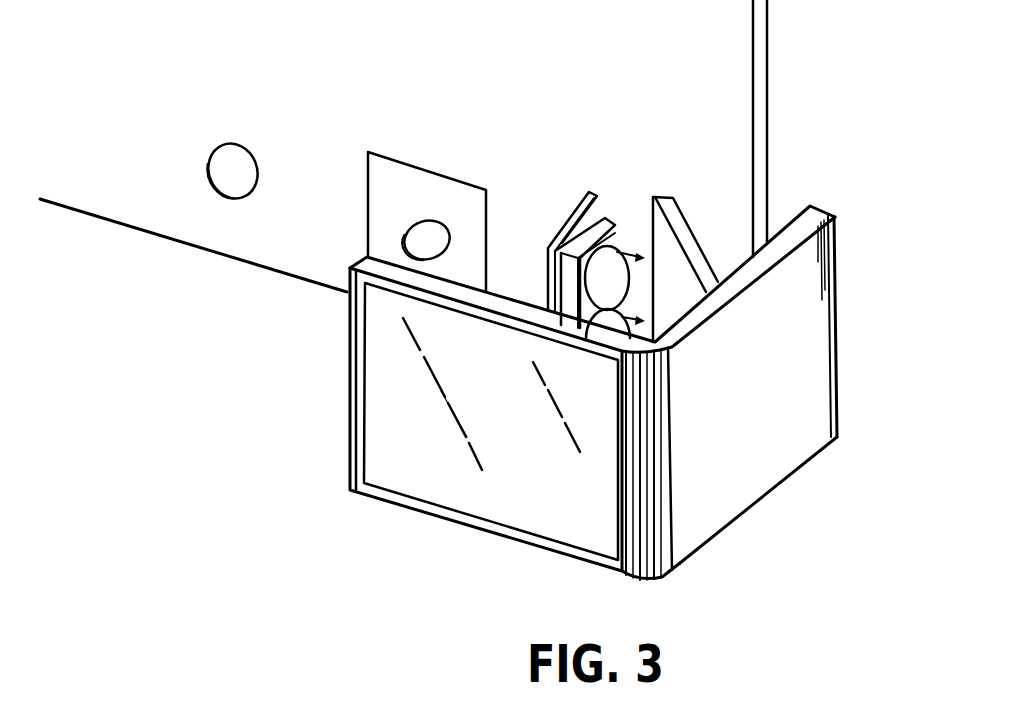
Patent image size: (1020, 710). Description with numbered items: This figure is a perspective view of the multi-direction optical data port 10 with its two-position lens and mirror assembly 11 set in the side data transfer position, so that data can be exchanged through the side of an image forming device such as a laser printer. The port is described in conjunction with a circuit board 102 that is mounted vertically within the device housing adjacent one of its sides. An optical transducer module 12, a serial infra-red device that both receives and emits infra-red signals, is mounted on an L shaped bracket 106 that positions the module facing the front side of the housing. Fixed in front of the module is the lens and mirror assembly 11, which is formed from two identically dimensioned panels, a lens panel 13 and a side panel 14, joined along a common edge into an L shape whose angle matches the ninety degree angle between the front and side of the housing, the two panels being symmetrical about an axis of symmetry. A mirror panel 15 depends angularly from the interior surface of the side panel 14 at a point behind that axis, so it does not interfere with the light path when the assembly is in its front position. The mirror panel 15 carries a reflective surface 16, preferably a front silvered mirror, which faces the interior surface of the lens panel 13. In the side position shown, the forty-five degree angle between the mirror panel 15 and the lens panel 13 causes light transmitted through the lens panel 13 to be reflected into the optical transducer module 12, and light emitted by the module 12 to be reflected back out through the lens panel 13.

The multi-direction optical data port 10 is at (476, 91).
The lens and mirror assembly 11 is at (856, 244).
The optical transducer module 12 is at (602, 230).
The lens panel 13 is at (438, 513).
The side panel 14 is at (783, 470).
The mirror panel 15 is at (678, 210).
The reflective surface 16 is at (698, 300).
The circuit board 102 is at (105, 221).
The L shaped bracket 106 is at (580, 193).